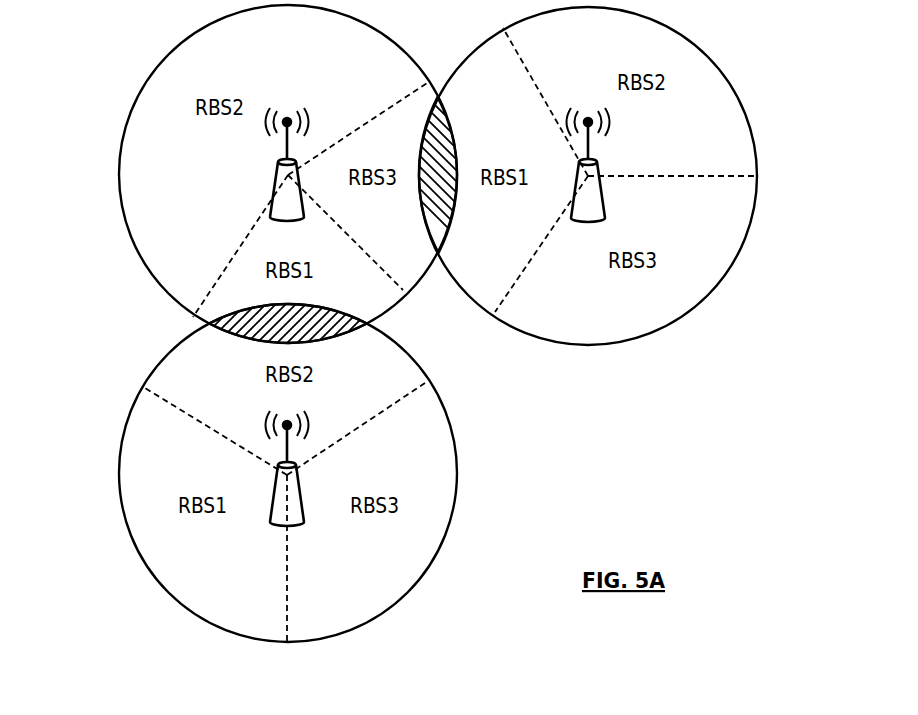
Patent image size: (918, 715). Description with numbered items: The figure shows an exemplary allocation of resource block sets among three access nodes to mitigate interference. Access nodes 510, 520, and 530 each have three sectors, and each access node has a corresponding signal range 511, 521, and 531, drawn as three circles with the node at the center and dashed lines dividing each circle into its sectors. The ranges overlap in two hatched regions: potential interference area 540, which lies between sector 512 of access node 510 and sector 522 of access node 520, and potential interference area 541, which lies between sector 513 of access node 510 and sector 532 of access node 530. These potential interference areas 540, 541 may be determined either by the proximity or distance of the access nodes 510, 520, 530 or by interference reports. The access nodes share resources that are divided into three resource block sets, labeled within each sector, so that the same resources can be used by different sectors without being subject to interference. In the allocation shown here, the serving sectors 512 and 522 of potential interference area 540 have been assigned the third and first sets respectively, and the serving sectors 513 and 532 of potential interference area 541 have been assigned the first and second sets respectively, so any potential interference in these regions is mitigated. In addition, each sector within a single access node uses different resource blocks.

The access node 510 is at (251, 164).
The signal range 511 is at (247, 174).
The sector 512 is at (357, 123).
The sector 513 is at (224, 246).
The access node 520 is at (626, 165).
The signal range 521 is at (628, 176).
The sector 522 is at (555, 102).
The access node 530 is at (249, 486).
The signal range 531 is at (277, 475).
The sector 532 is at (365, 429).
The potential interference area 540 is at (467, 226).
The potential interference area 541 is at (252, 321).